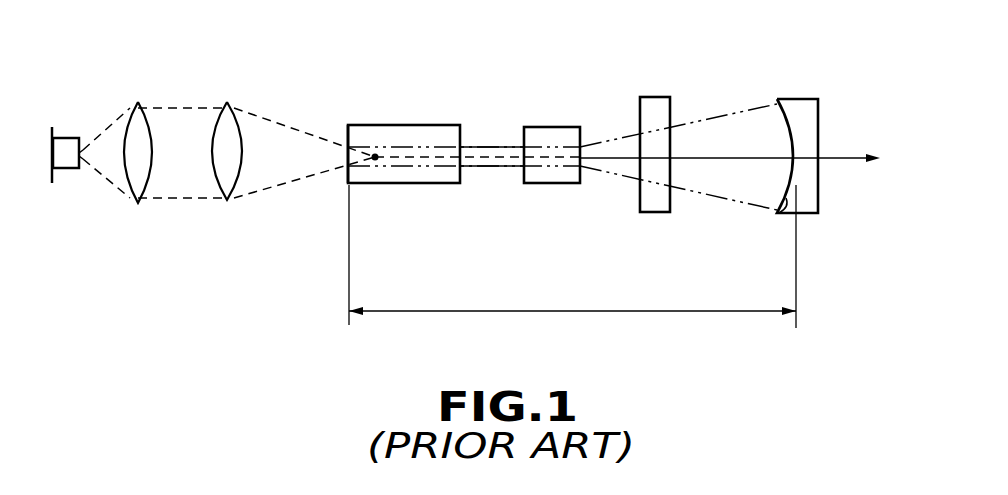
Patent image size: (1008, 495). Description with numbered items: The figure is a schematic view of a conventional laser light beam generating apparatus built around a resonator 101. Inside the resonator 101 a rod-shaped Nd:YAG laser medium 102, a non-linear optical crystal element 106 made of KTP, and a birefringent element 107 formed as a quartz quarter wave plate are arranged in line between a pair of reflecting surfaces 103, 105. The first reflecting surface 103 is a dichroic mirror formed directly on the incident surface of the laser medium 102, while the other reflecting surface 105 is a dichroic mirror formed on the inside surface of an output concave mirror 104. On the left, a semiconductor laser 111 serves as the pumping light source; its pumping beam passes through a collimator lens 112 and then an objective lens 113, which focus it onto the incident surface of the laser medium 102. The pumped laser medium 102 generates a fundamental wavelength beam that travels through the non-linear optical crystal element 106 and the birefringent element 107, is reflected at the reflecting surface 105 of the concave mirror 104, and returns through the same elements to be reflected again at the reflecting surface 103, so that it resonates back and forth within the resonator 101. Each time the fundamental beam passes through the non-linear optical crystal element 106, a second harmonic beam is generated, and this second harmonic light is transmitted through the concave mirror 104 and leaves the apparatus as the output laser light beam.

The resonator 101 is at (627, 205).
The laser medium 102 is at (430, 115).
The reflecting surface 103 is at (347, 173).
The output concave mirror 104 is at (800, 107).
The reflecting surface 105 is at (785, 214).
The non-linear optical crystal element 106 is at (552, 118).
The birefringent element 107 is at (658, 108).
The semiconductor laser 111 is at (64, 158).
The collimator lens 112 is at (135, 120).
The objective lens 113 is at (232, 120).
The beam waist point P is at (373, 153).